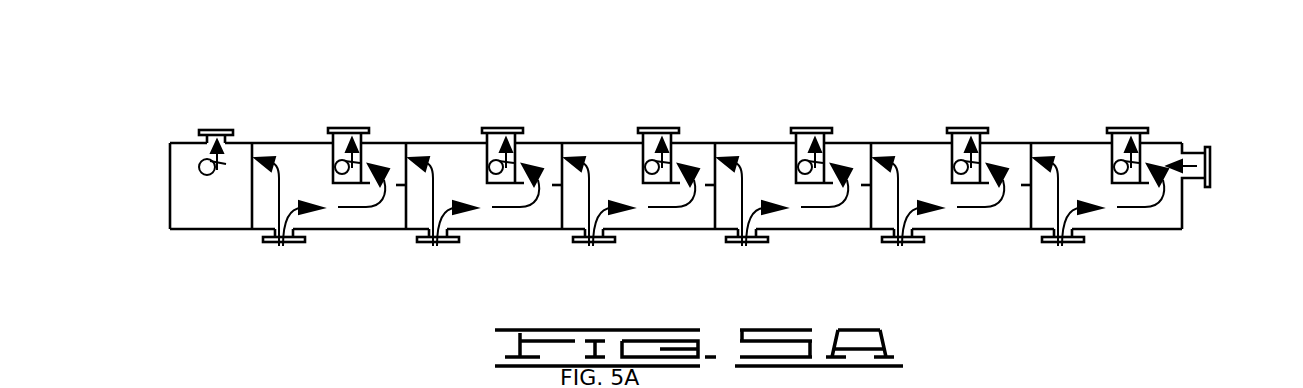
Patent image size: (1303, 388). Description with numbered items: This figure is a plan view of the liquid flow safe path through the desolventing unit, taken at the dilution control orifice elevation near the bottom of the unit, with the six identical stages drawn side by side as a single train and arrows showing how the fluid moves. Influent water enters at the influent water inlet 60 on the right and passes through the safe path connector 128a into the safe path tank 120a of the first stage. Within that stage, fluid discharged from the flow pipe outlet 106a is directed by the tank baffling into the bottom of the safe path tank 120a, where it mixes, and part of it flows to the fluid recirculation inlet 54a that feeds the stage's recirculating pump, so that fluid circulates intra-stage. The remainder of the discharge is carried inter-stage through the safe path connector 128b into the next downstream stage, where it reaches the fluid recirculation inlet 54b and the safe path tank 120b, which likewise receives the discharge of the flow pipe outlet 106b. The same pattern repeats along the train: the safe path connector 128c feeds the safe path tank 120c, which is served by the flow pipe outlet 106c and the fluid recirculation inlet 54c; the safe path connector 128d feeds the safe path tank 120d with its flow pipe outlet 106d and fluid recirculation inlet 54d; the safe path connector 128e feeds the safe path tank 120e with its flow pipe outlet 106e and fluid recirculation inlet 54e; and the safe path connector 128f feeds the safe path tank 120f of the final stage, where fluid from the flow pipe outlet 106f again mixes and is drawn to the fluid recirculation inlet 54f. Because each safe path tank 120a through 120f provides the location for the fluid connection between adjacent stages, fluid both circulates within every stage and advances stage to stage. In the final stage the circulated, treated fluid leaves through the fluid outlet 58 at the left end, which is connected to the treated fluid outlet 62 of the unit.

The fluid outlet 58 is at (252, 158).
The treated fluid outlet 62 is at (215, 131).
The influent water inlet 60 is at (1213, 163).
The fluid recirculation inlet 54f is at (369, 128).
The fluid recirculation inlet 54e is at (524, 128).
The fluid recirculation inlet 54d is at (680, 128).
The fluid recirculation inlet 54c is at (833, 128).
The fluid recirculation inlet 54b is at (988, 130).
The fluid recirculation inlet 54a is at (1124, 130).
The safe path connector 128f is at (406, 146).
The safe path connector 128e is at (562, 147).
The safe path connector 128d is at (715, 146).
The safe path connector 128c is at (871, 147).
The safe path connector 128b is at (1031, 145).
The safe path connector 128a is at (1180, 150).
The safe path tank 120f is at (397, 197).
The safe path tank 120e is at (518, 197).
The safe path tank 120d is at (673, 195).
The safe path tank 120c is at (828, 200).
The safe path tank 120b is at (982, 200).
The safe path tank 120a is at (1133, 202).
The flow pipe outlet 106f is at (285, 246).
The flow pipe outlet 106e is at (439, 246).
The flow pipe outlet 106d is at (595, 246).
The flow pipe outlet 106c is at (748, 246).
The flow pipe outlet 106b is at (904, 246).
The flow pipe outlet 106a is at (1064, 246).